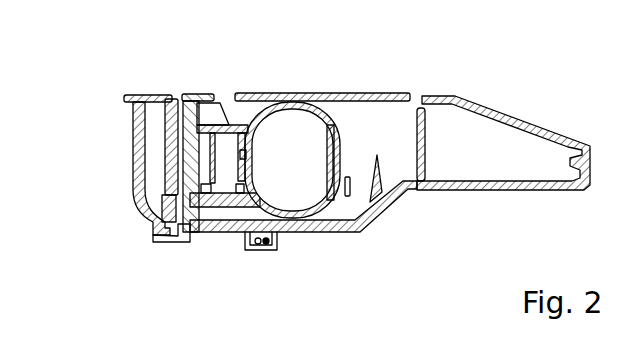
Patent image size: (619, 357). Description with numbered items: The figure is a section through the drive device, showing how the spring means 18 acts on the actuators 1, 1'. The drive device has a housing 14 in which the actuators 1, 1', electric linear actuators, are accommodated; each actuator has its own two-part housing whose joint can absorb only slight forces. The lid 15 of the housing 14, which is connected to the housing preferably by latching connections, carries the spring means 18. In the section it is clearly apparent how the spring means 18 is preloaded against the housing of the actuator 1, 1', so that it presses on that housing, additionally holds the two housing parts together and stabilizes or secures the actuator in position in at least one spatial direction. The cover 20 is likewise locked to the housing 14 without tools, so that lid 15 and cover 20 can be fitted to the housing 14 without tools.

The actuator 1 is at (298, 204).
The actuator 1' is at (298, 204).
The housing 14 is at (131, 148).
The lid 15 is at (350, 102).
The spring means 18 is at (228, 123).
The cover 20 is at (527, 128).